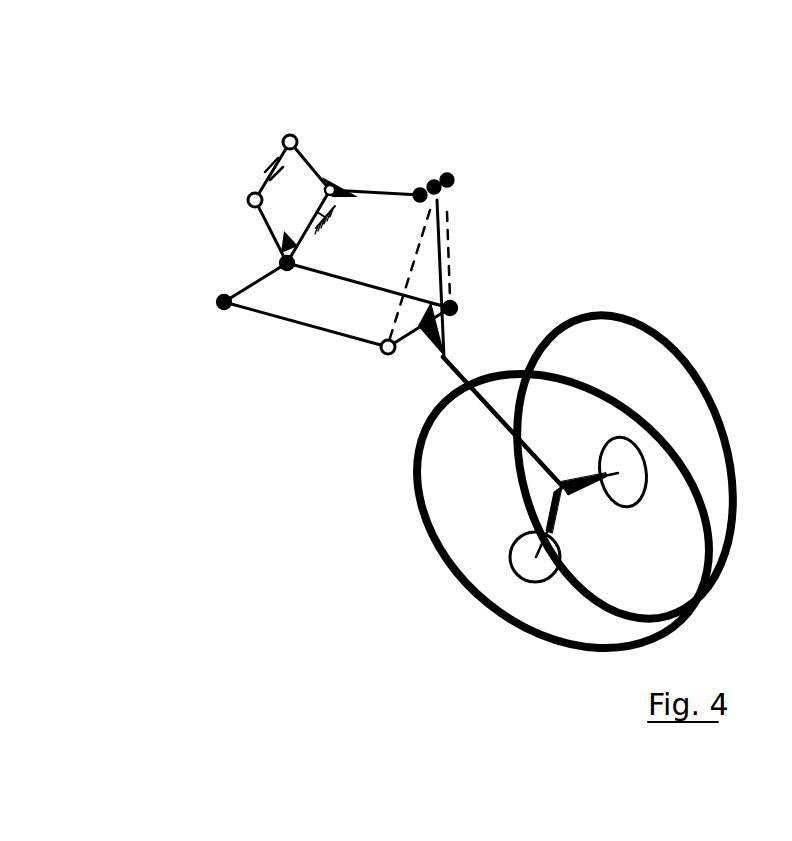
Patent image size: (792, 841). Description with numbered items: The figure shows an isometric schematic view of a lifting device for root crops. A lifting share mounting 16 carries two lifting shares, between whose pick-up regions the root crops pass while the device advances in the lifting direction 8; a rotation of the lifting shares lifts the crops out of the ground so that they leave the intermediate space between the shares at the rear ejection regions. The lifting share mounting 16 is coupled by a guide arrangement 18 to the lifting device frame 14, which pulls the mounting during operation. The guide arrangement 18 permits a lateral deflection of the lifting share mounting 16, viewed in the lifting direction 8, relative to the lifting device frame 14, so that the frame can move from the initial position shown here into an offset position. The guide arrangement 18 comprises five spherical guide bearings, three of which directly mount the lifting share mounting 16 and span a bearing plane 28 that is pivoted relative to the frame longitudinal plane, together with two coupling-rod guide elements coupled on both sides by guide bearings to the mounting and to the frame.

The lifting direction 8 is at (422, 563).
The lifting device frame 14 is at (280, 252).
The lifting share mounting 16 is at (445, 360).
The guide arrangement 18 is at (98, 428).
The bearing plane 28 is at (450, 248).